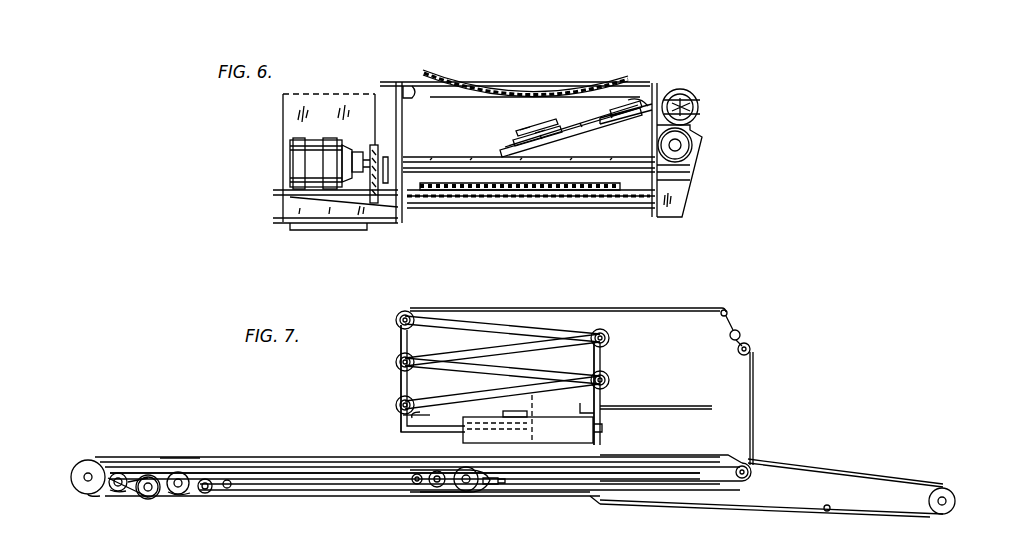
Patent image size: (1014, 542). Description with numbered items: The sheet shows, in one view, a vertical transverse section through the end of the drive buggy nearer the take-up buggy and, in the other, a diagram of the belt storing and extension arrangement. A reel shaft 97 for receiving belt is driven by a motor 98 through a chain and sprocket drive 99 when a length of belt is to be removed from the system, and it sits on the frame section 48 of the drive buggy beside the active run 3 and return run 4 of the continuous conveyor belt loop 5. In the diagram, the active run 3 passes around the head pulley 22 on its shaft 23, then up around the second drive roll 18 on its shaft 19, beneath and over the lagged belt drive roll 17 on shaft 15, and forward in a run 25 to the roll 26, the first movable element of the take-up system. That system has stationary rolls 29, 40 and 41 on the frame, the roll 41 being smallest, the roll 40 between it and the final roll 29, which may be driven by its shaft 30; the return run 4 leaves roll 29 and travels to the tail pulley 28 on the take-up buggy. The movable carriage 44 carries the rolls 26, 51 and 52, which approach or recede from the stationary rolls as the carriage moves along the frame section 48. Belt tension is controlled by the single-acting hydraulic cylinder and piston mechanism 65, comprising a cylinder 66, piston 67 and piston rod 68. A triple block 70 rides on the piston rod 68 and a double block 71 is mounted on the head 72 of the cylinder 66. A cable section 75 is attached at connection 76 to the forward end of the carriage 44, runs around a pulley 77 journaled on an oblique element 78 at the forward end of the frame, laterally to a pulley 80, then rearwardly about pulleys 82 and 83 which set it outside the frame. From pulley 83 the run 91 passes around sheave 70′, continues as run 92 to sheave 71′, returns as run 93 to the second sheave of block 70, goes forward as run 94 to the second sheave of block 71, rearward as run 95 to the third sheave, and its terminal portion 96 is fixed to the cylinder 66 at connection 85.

In FIG. 6, the active run 3 is at (596, 92).
In FIG. 7, the active run 3 is at (297, 460).
In FIG. 6, the return run 4 is at (476, 186).
In FIG. 7, the continuous conveyor belt loop 5 is at (95, 451).
In FIG. 7, the shaft 15 is at (118, 474).
In FIG. 7, the belt drive roll 17 is at (117, 492).
In FIG. 7, the second drive roll 18 is at (148, 498).
In FIG. 7, the supporting and driving shaft 19 is at (148, 478).
In FIG. 7, the head pulley 22 is at (90, 494).
In FIG. 7, the shaft 23 is at (80, 477).
In FIG. 7, the run 25 is at (163, 468).
In FIG. 7, the roll 26 is at (466, 492).
In FIG. 7, the tail pulley 28 is at (955, 501).
In FIG. 7, the final roll 29 is at (181, 494).
In FIG. 7, the shaft 30 is at (178, 474).
In FIG. 7, the roll 40 is at (206, 492).
In FIG. 7, the roll 41 is at (229, 488).
In FIG. 7, the movable carriage 44 is at (503, 507).
In FIG. 6, the frame section 48 is at (655, 217).
In FIG. 7, the roll 51 is at (438, 488).
In FIG. 7, the roll 52 is at (416, 485).
In FIG. 6, the hydraulic cylinder and piston mechanism 65 is at (716, 124).
In FIG. 7, the hydraulic cylinder and piston mechanism 65 is at (583, 456).
In FIG. 7, the cylinder 66 is at (562, 418).
In FIG. 7, the piston 67 is at (533, 410).
In FIG. 7, the piston rod 68 is at (478, 420).
In FIG. 7, the multiple block 70 is at (400, 340).
In FIG. 7, the sheave 70′ is at (396, 320).
In FIG. 7, the multiple block 71 is at (600, 362).
In FIG. 7, the sheave 71′ is at (609, 338).
In FIG. 7, the head 72 is at (598, 428).
In FIG. 7, the cable section 75 is at (665, 482).
In FIG. 7, the connection 76 is at (507, 480).
In FIG. 6, the pulley 77 is at (530, 136).
In FIG. 7, the pulley 77 is at (748, 470).
In FIG. 6, the oblique element 78 is at (603, 133).
In FIG. 6, the pulley 80 is at (616, 110).
In FIG. 7, the pulley 80 is at (751, 349).
In FIG. 7, the pulley 82 is at (739, 332).
In FIG. 7, the pulley 83 is at (727, 311).
In FIG. 7, the connection 85 is at (506, 411).
In FIG. 7, the run 91 is at (640, 309).
In FIG. 7, the run 92 is at (523, 330).
In FIG. 7, the run 93 is at (470, 350).
In FIG. 7, the run 94 is at (543, 372).
In FIG. 7, the run 95 is at (446, 392).
In FIG. 7, the terminal portion 96 is at (418, 415).
In FIG. 6, the shaft 97 is at (527, 178).
In FIG. 6, the motor 98 is at (300, 163).
In FIG. 6, the chain and sprocket drive 99 is at (376, 150).